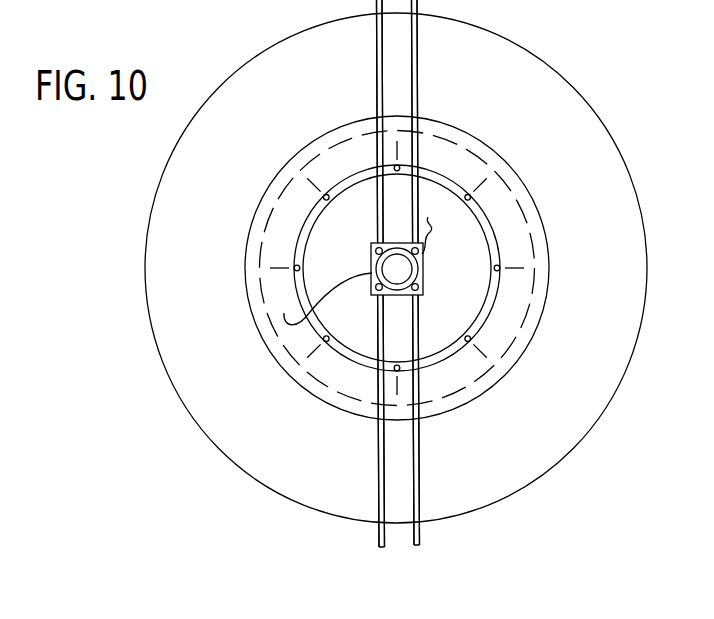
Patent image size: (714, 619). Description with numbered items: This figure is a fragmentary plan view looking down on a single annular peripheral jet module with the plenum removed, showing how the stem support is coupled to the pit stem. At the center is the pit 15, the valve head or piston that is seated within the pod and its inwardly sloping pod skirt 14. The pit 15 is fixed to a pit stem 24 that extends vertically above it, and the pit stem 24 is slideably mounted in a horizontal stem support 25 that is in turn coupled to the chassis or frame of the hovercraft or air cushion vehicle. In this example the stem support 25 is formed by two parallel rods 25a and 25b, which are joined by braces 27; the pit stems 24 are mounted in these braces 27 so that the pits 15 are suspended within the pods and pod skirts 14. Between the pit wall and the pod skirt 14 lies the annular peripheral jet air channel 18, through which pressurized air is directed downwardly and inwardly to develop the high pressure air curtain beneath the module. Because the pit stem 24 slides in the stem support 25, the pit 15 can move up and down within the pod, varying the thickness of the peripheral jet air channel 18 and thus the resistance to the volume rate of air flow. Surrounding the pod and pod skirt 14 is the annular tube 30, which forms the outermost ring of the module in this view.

The annular tube 30 is at (585, 437).
The peripheral jet air channel 18 is at (211, 223).
The pod skirt 14 is at (532, 336).
The pit 15 is at (452, 340).
The pit stem 24 is at (401, 270).
The stem support 25 is at (362, 6).
The rod 25a is at (376, 92).
The rod 25b is at (428, 463).
The brace 27 is at (362, 262).